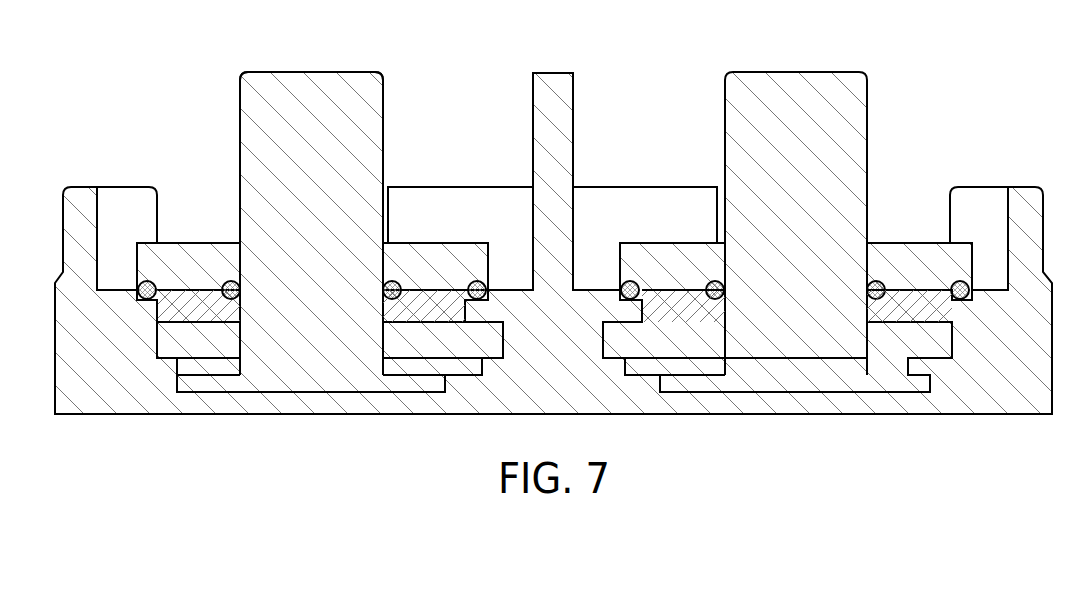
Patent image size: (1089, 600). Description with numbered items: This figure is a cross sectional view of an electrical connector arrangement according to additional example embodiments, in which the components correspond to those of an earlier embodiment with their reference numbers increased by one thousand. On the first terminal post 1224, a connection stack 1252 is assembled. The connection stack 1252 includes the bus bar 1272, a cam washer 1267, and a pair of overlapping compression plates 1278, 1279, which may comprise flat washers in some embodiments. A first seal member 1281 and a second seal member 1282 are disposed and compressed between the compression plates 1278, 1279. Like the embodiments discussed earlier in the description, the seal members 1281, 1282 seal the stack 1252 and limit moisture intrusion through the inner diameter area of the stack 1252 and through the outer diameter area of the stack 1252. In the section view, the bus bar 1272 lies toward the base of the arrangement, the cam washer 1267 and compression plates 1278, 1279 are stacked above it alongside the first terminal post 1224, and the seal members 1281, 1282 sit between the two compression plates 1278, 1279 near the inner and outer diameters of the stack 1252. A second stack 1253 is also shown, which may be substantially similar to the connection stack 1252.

The first terminal post 1224 is at (342, 163).
The connection stack 1252 is at (195, 110).
The second stack 1253 is at (904, 200).
The cam washer 1267 is at (235, 348).
The bus bar 1272 is at (482, 360).
The compression plate 1278 is at (208, 252).
The compression plate 1279 is at (237, 309).
The first seal member 1281 is at (240, 288).
The second seal member 1282 is at (139, 298).